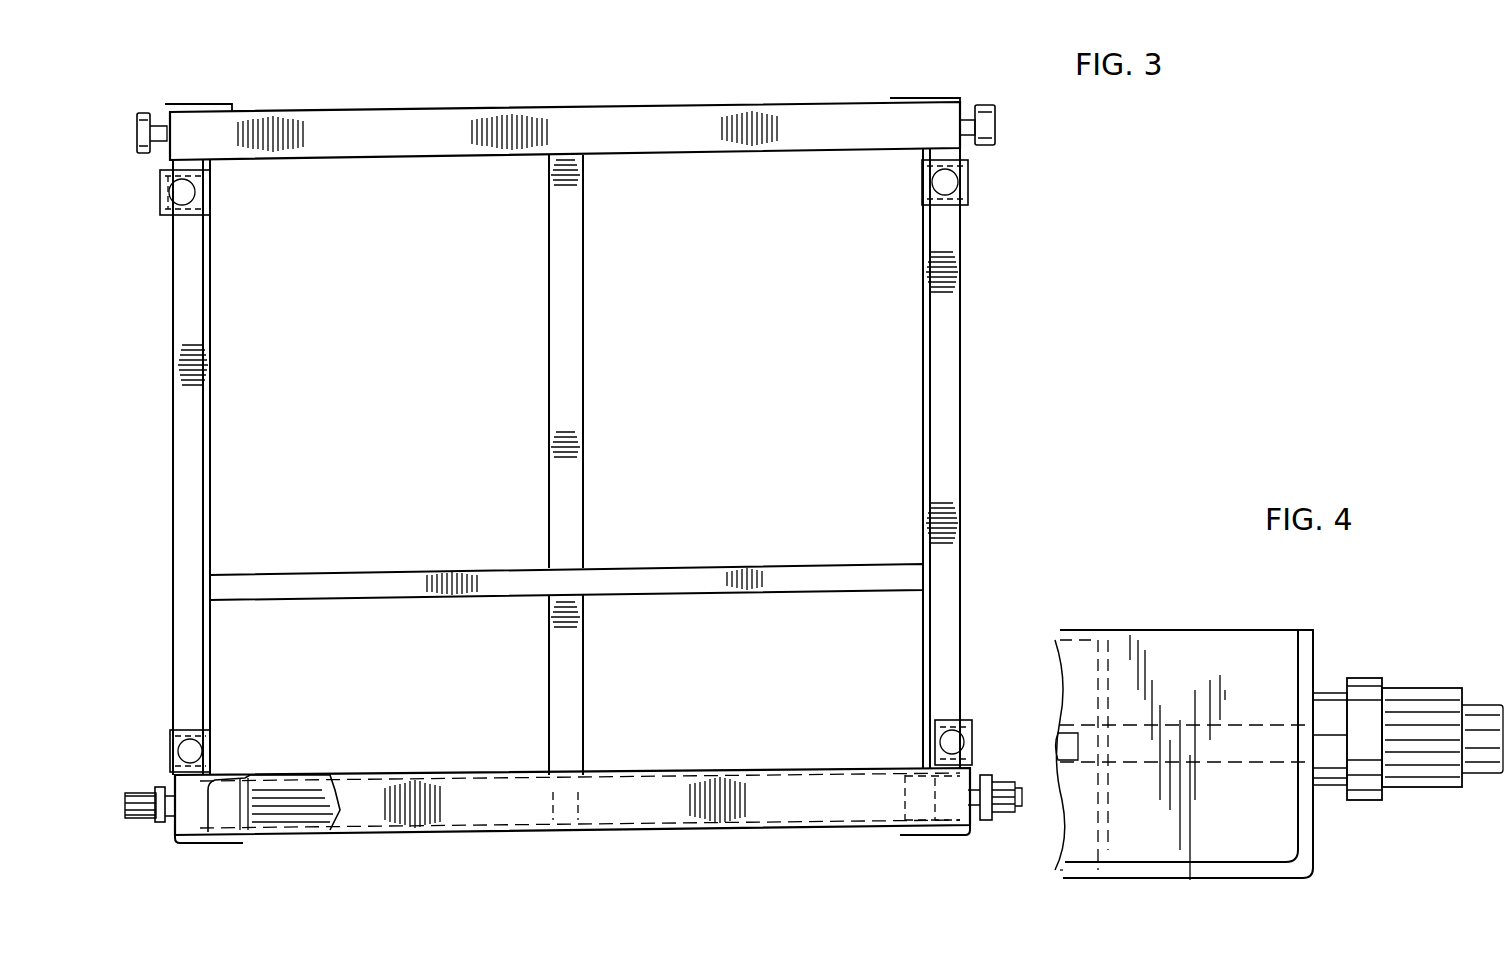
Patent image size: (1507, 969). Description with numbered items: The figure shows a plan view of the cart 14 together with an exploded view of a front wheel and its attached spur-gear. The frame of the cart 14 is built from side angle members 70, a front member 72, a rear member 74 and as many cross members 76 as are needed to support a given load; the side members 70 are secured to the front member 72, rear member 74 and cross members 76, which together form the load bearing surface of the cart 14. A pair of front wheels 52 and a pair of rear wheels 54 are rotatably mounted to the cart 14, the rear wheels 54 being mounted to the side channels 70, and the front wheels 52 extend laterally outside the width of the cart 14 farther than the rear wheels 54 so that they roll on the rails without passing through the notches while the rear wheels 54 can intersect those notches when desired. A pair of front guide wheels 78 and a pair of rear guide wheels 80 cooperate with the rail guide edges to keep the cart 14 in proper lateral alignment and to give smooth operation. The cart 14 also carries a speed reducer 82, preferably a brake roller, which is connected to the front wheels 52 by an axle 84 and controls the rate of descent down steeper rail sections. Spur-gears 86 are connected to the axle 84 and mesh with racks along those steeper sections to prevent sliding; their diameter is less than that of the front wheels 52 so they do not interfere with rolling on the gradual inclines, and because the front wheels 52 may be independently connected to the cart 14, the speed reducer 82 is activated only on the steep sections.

In FIG. 3, the cart 14 is at (720, 838).
In FIG. 3, the front wheels 52 is at (163, 824).
In FIG. 4, the front wheels 52 is at (1366, 678).
In FIG. 3, the rear wheels 54 is at (143, 112).
In FIG. 3, the side angle members 70 is at (983, 343).
In FIG. 3, the front member 72 is at (548, 838).
In FIG. 3, the rear member 74 is at (600, 108).
In FIG. 3, the cross members 76 is at (512, 575).
In FIG. 3, the front guide wheels 78 is at (172, 750).
In FIG. 3, the rear guide wheels 80 is at (160, 192).
In FIG. 3, the speed reducer 82 is at (290, 838).
In FIG. 4, the speed reducer 82 is at (1070, 850).
In FIG. 3, the axle 84 is at (938, 838).
In FIG. 4, the axle 84 is at (1248, 730).
In FIG. 3, the spur-gears 86 is at (988, 776).
In FIG. 4, the spur-gears 86 is at (1425, 688).